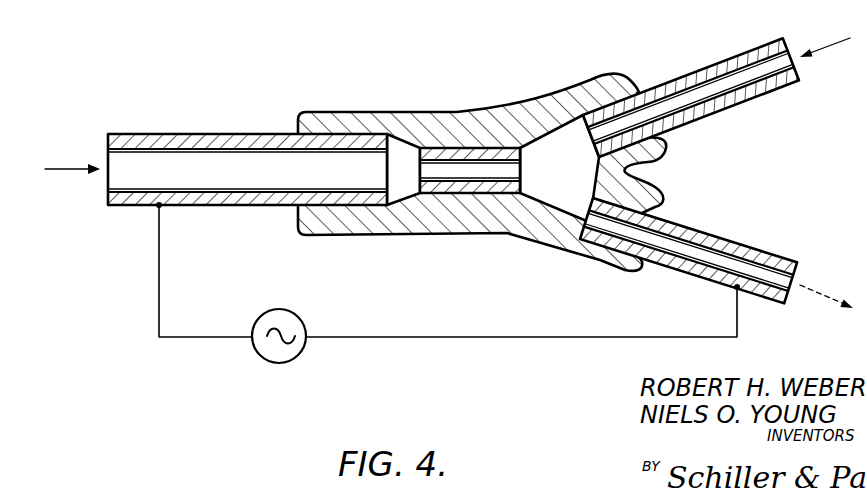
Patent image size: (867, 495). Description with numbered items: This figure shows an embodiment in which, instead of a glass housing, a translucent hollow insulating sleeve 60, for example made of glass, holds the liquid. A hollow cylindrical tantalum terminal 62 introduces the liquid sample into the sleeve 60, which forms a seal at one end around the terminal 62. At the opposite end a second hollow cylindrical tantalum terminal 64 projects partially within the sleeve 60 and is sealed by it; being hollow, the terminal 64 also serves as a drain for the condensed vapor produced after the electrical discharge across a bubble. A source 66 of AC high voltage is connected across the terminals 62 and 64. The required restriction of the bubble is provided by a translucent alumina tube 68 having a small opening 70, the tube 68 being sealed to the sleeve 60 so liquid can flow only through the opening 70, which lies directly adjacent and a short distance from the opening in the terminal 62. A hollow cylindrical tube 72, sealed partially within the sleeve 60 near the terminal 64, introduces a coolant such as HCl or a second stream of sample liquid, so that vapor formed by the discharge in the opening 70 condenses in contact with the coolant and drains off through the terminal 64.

The insulating sleeve 60 is at (403, 113).
The tantalum terminal 62 is at (222, 134).
The second tantalum terminal 64 is at (748, 247).
The source of AC high voltage 66 is at (292, 320).
The alumina tube 68 is at (522, 148).
The opening 70 is at (512, 171).
The hollow cylindrical tube 72 is at (737, 104).